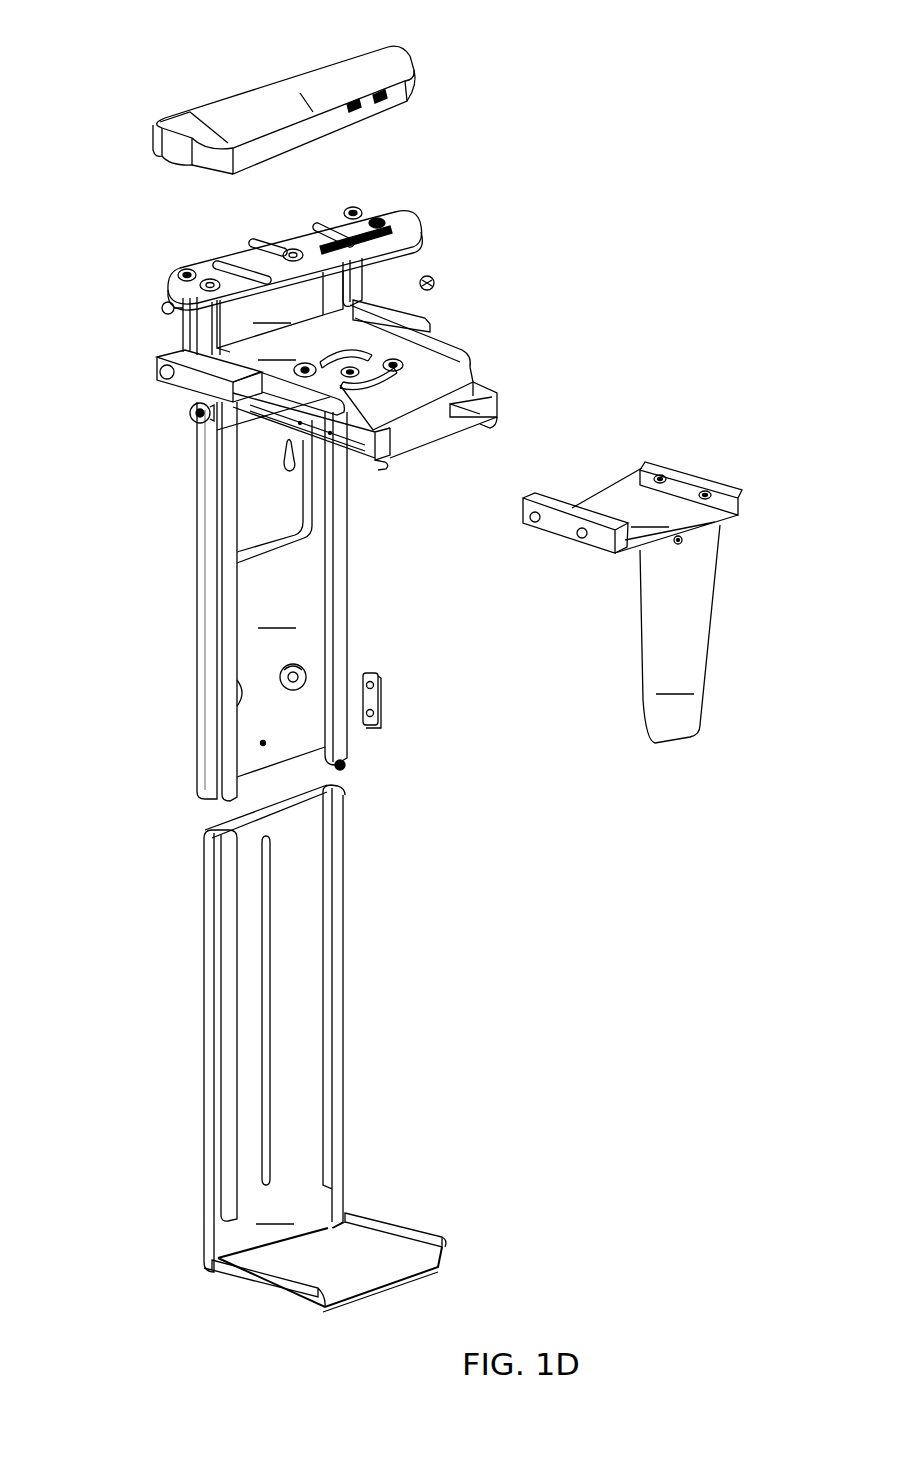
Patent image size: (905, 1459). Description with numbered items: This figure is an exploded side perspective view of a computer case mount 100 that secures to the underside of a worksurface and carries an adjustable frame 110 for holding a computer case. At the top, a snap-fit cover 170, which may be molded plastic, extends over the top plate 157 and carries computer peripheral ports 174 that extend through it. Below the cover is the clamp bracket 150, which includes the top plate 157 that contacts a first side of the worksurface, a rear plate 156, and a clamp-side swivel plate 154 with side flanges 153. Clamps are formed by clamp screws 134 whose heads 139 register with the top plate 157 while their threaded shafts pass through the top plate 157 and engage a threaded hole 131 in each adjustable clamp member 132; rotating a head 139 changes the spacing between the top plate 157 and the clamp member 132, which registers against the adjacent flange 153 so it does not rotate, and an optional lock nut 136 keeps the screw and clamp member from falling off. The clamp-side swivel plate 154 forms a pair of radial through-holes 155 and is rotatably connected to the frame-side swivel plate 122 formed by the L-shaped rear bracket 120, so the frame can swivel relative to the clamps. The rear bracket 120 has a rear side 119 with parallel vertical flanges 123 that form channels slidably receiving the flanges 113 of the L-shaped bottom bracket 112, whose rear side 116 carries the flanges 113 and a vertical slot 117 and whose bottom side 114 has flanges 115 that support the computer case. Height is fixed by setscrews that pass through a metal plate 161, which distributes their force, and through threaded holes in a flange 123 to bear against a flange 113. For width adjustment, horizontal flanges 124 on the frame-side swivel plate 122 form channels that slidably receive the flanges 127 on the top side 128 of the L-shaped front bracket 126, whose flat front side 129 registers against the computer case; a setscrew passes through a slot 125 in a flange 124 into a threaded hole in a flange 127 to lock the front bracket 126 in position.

The computer case mount 100 is at (110, 80).
The adjustable frame 110 is at (98, 533).
The L-shaped bottom bracket 112 is at (310, 1053).
The flanges 113 is at (227, 893).
The bottom side 114 is at (373, 1283).
The flanges 115 is at (437, 1237).
The rear side 116 is at (273, 1228).
The vertical slot 117 is at (267, 977).
The rear side 119 is at (281, 598).
The L-shaped rear bracket 120 is at (203, 637).
The frame-side swivel plate 122 is at (490, 388).
The flanges 123 is at (283, 462).
The flanges 124 is at (490, 428).
The slot 125 is at (375, 462).
The L-shaped front bracket 126 is at (703, 518).
The flanges 127 is at (600, 535).
The top side 128 is at (650, 516).
The front side 129 is at (680, 634).
The threaded hole 131 is at (175, 357).
The adjustable clamp member 132 is at (430, 318).
The clamp screw 134 is at (365, 280).
The lock nut 136 is at (190, 407).
The head 139 is at (368, 212).
The clamp bracket 150 is at (470, 370).
The side flanges 153 is at (468, 356).
The clamp-side swivel plate 154 is at (330, 356).
The radial through-holes 155 is at (364, 355).
The rear plate 156 is at (263, 312).
The top plate 157 is at (232, 258).
The metal plate 161 is at (380, 698).
The snap-fit cover 170 is at (345, 55).
The computer peripheral ports 174 is at (392, 89).